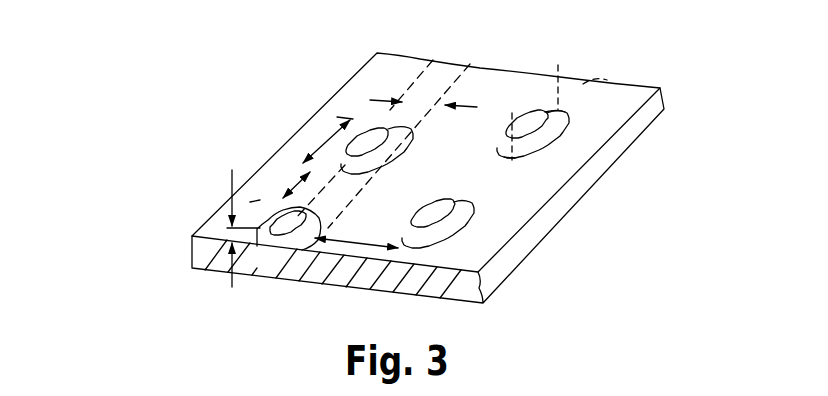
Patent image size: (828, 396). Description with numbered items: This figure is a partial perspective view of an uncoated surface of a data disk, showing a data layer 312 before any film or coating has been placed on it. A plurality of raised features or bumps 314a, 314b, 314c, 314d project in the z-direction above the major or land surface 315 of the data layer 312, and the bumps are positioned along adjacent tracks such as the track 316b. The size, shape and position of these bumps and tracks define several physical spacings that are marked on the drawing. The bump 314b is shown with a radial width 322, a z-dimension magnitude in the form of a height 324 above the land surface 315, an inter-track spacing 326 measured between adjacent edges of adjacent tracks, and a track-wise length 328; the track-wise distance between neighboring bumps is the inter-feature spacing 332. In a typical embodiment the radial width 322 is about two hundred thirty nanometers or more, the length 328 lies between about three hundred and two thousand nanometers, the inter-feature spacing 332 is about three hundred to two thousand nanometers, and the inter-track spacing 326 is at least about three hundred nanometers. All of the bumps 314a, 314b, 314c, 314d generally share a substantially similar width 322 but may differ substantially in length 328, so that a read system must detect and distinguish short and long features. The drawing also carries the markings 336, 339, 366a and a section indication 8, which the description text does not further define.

The data layer 312 is at (178, 249).
The bump 314a is at (272, 210).
The bump 314b is at (370, 137).
The bump 314c is at (475, 213).
The bump 314d is at (556, 130).
The land surface 315 is at (523, 215).
The track 316b is at (587, 82).
The radial width 322 is at (477, 107).
The height 324 is at (231, 182).
The inter-track spacing 326 is at (357, 240).
The length 328 is at (322, 148).
The inter-feature spacing 332 is at (293, 183).
The protrusion base 336 is at (510, 153).
The protrusion rim 339 is at (567, 111).
The channel 366a is at (433, 60).
The section line 8- 8 is at (590, 60).